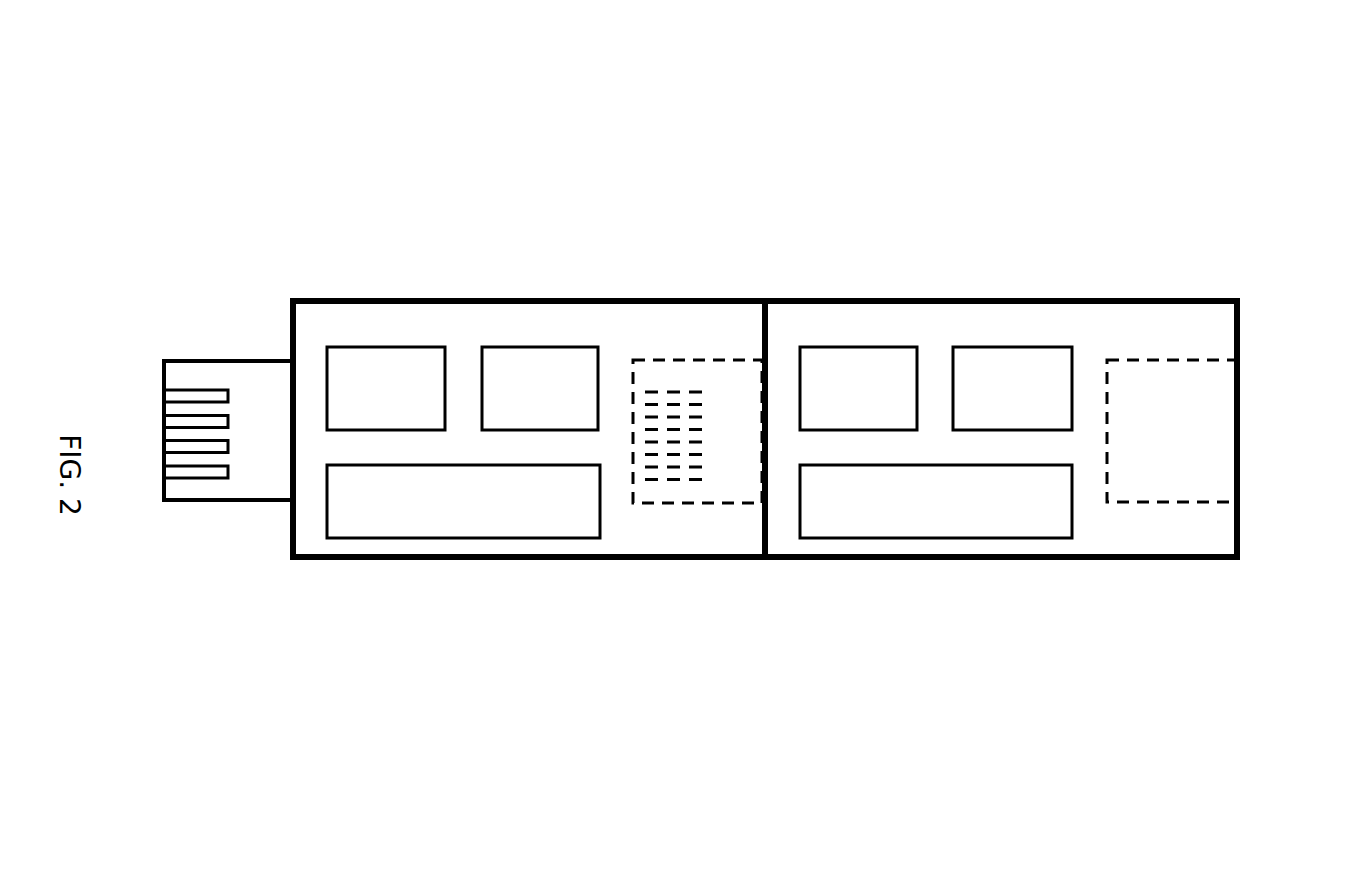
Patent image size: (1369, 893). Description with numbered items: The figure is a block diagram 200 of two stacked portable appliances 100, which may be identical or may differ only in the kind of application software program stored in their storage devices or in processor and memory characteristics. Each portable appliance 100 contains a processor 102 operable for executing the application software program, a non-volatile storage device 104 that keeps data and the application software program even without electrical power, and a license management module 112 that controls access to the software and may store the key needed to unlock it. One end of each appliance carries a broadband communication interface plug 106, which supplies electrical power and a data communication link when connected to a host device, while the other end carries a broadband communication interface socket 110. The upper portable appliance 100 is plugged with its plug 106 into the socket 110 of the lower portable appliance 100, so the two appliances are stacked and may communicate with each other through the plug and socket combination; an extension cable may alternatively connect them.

The portable appliance 100 is at (445, 250).
The processor 102 is at (347, 406).
The storage device 104 is at (429, 516).
The broadband communication interface plug 106 is at (231, 562).
The broadband communication interface socket 110 is at (712, 370).
The license management module 112 is at (511, 406).
The block diagram 200 is at (1270, 143).